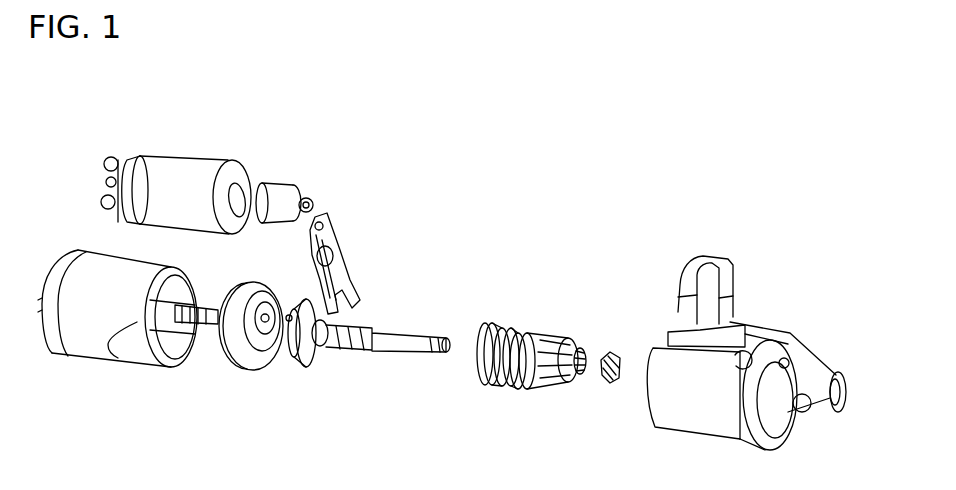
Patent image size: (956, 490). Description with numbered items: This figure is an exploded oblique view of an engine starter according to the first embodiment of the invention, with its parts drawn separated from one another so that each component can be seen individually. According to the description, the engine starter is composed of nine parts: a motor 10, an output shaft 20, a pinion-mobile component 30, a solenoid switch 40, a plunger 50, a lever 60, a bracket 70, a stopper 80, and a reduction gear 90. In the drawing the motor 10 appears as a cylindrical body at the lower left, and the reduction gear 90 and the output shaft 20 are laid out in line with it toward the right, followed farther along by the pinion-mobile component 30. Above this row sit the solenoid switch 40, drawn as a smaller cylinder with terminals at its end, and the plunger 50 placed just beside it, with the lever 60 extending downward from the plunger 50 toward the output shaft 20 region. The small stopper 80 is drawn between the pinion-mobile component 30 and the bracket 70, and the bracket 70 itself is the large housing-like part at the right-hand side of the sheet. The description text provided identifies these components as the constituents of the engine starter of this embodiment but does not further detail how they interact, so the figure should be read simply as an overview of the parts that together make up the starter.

The motor 10 is at (118, 358).
The output shaft 20 is at (381, 356).
The pinion-mobile component 30 is at (512, 335).
The solenoid switch 40 is at (187, 190).
The plunger 50 is at (307, 187).
The lever 60 is at (340, 250).
The bracket 70 is at (700, 257).
The stopper 80 is at (608, 348).
The reduction gear 90 is at (238, 354).